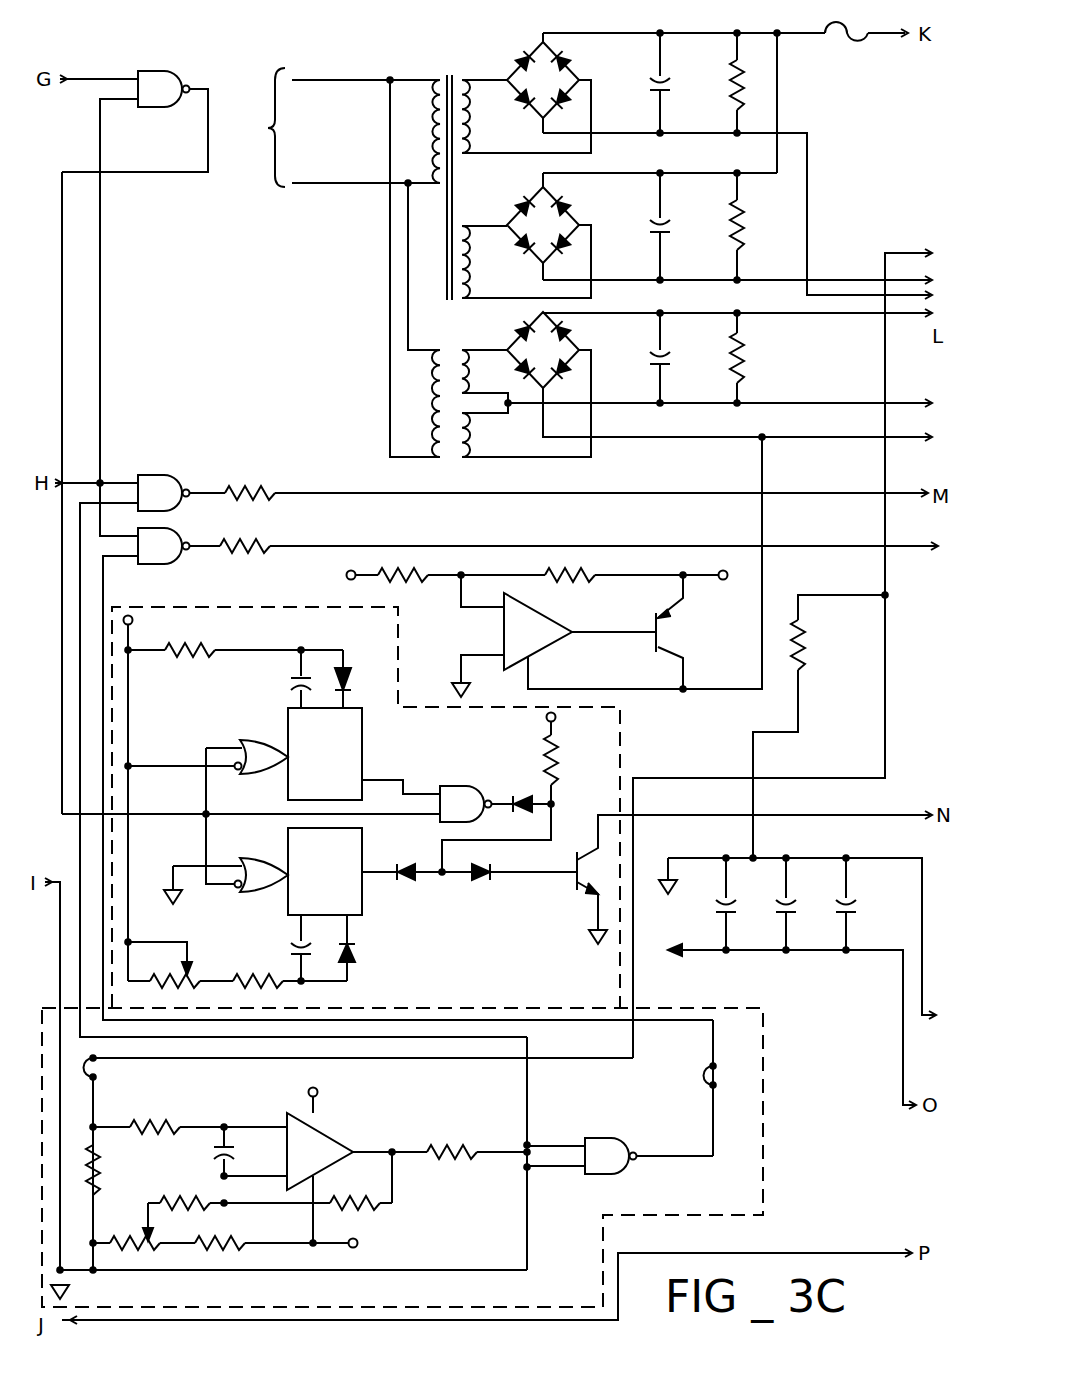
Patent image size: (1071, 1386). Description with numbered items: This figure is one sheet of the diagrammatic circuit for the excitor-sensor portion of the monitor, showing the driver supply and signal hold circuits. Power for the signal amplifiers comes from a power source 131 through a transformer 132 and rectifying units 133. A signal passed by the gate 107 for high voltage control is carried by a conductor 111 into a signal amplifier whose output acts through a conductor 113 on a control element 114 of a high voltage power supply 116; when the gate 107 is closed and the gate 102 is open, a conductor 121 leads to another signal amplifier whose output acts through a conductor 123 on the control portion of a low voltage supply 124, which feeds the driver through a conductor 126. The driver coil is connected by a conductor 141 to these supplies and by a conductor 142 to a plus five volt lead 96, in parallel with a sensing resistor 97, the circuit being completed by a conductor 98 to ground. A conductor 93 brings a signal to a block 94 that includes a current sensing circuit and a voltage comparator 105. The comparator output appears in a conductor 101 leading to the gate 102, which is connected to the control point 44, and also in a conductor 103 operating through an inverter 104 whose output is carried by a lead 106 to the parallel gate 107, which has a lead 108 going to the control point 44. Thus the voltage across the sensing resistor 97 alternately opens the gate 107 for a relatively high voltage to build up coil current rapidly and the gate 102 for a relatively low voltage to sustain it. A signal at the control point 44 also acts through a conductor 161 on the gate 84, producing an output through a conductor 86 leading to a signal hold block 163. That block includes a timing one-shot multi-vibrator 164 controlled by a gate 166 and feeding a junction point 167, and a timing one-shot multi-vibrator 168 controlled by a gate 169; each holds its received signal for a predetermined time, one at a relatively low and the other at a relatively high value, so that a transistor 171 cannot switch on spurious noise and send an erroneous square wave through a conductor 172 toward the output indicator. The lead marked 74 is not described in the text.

The gate 84 is at (163, 71).
The conductor 86 is at (165, 178).
The conductor 161 is at (101, 305).
The control point 44 is at (104, 481).
The gate 102 is at (168, 476).
The lead 108 is at (123, 538).
The gate 107 is at (172, 566).
The conductor 121 is at (488, 498).
The conductor 111 is at (527, 548).
The power source 131 is at (303, 186).
The transformer 132 is at (452, 350).
The high voltage power supply 116 is at (498, 62).
The control element 114 is at (538, 107).
The conductor 141 is at (703, 25).
The conductor 126 is at (779, 107).
The conductor 113 is at (810, 168).
The low voltage supply 124 is at (601, 210).
The conductor 123 is at (770, 280).
The conductor 142 is at (885, 253).
The rectifying units 133 is at (573, 347).
The conductor 172 is at (665, 820).
The signal hold block 163 is at (621, 742).
The conductor 93 is at (58, 986).
The block 94 is at (482, 1006).
The gate 169 is at (250, 738).
The timing one-shot multi-vibrator 168 is at (365, 736).
The gate 166 is at (258, 893).
The timing one-shot multi-vibrator 164 is at (365, 906).
The junction point 167 is at (445, 877).
The transistor 171 is at (570, 880).
The plus five volt lead 96 is at (885, 665).
The sensing resistor 97 is at (803, 672).
The conductor 98 is at (755, 832).
The conductor 101 is at (525, 1100).
The voltage comparator 105 is at (333, 1141).
The conductor 103 is at (562, 1172).
The inverter 104 is at (618, 1140).
The lead 106 is at (712, 1052).
The conductor 74 is at (722, 1252).